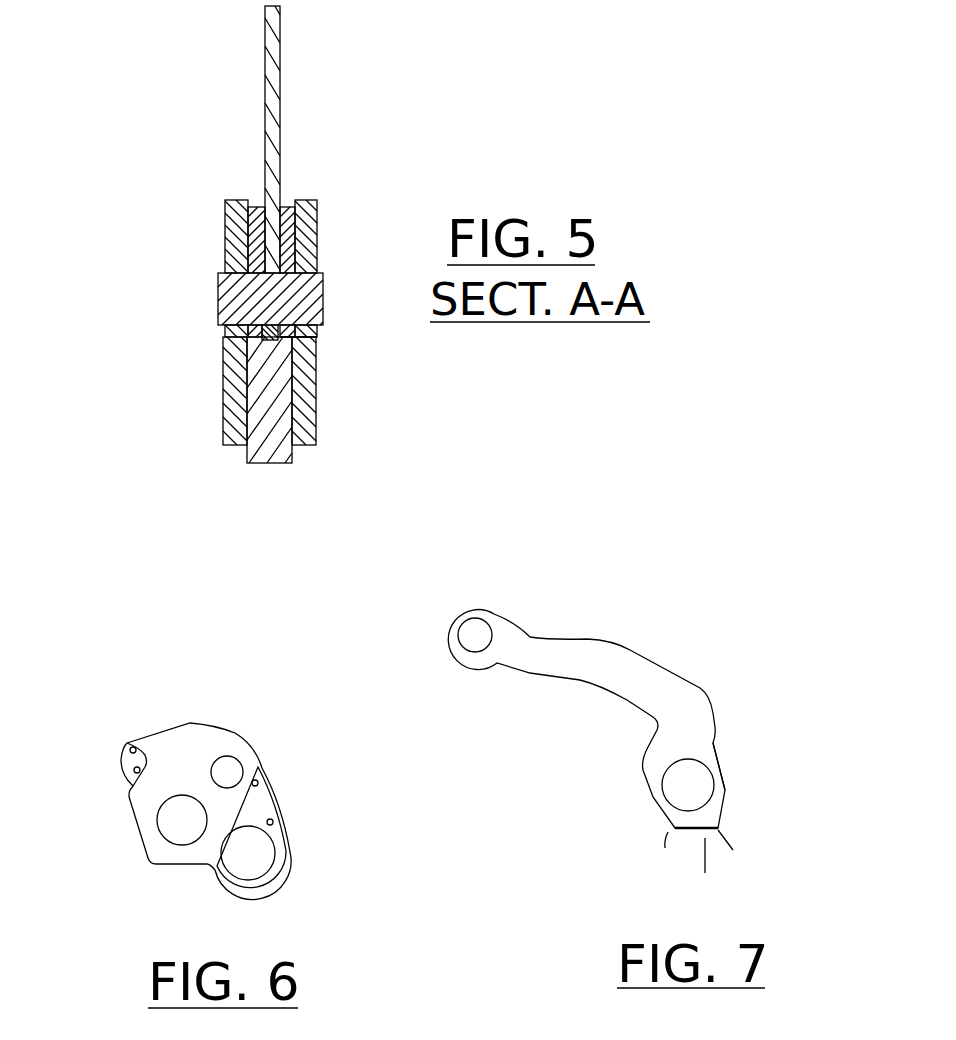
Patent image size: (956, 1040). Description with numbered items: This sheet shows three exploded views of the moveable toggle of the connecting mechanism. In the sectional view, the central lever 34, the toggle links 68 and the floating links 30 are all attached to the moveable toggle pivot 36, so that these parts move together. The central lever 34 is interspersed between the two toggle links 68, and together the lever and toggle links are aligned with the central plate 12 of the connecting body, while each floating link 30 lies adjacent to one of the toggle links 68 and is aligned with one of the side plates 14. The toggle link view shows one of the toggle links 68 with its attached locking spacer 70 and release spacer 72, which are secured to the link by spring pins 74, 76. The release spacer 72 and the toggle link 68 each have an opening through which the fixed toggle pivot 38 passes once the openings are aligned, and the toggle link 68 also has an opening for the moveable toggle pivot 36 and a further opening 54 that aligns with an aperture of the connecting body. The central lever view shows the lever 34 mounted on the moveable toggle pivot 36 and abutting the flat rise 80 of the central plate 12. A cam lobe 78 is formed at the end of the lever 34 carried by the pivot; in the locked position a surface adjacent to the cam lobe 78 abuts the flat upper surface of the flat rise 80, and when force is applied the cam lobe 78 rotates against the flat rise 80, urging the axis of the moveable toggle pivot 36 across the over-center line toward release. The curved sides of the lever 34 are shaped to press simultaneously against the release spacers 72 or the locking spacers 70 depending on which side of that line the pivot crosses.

In FIG. 5, the central plate 12 is at (273, 463).
In FIG. 7, the central plate 12 is at (726, 843).
In FIG. 5, the side plates 14 is at (230, 402).
In FIG. 5, the floating links 30 is at (227, 227).
In FIG. 5, the central lever 34 is at (280, 100).
In FIG. 7, the central lever 34 is at (598, 652).
In FIG. 5, the moveable toggle pivot 36 is at (323, 307).
In FIG. 6, the moveable toggle pivot 36 is at (187, 840).
In FIG. 7, the moveable toggle pivot 36 is at (695, 790).
In FIG. 6, the fixed toggle pivot 38 is at (258, 867).
In FIG. 6, the opening 54 is at (237, 764).
In FIG. 5, the toggle links 68 is at (257, 205).
In FIG. 6, the toggle links 68 is at (193, 732).
In FIG. 6, the locking spacer 70 is at (122, 762).
In FIG. 6, the release spacer 72 is at (263, 807).
In FIG. 6, the spring pins 74 is at (130, 740).
In FIG. 6, the spring pins 76 is at (255, 782).
In FIG. 5, the cam lobe 78 is at (317, 345).
In FIG. 7, the cam lobe 78 is at (723, 822).
In FIG. 5, the flat rise 80 is at (317, 370).
In FIG. 7, the flat rise 80 is at (705, 873).